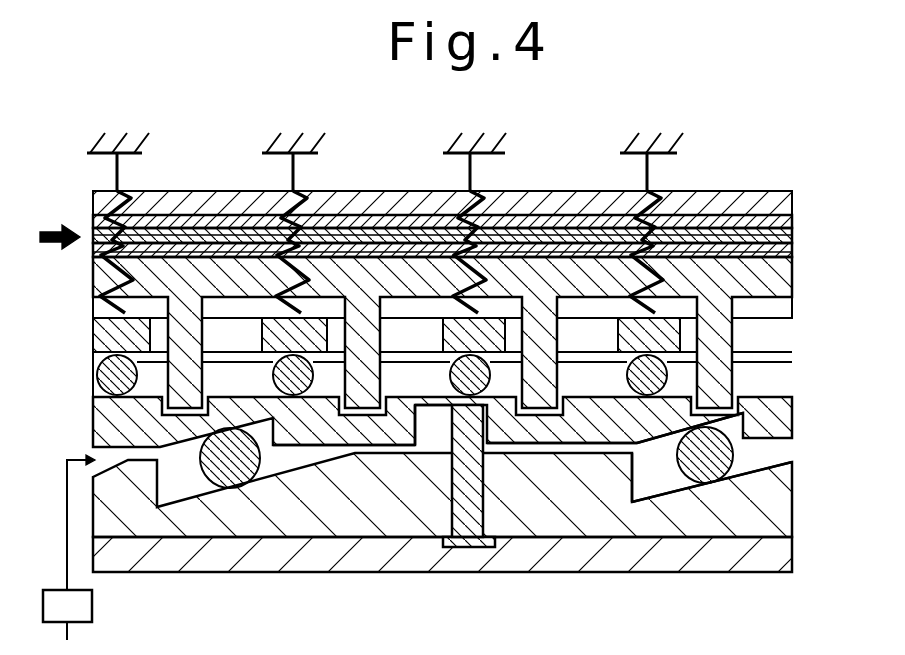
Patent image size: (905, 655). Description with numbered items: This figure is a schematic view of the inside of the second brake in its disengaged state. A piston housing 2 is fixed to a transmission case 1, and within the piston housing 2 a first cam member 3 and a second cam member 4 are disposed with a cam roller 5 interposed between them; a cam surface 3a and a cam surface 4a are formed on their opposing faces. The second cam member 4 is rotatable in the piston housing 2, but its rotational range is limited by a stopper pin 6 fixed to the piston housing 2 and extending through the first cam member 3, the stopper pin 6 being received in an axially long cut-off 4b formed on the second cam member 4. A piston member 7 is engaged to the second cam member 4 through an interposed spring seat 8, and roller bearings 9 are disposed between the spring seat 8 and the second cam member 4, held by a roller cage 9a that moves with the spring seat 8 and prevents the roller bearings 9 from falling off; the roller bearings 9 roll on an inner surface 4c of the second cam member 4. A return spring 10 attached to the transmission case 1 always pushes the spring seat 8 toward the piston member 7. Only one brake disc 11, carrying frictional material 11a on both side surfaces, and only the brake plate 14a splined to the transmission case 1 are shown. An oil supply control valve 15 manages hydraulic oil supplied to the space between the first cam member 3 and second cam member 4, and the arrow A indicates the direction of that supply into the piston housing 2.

The transmission case 1 is at (667, 142).
The return spring 10 is at (643, 170).
The brake plate 14a is at (777, 203).
The frictional material 11a is at (777, 220).
The brake disc 11 is at (777, 235).
The piston member 7 is at (777, 274).
The spring seat 8 is at (670, 335).
The roller bearing 9 is at (650, 382).
The roller cage 9a is at (616, 366).
The second cam member 4 is at (777, 418).
The cam surface 4a is at (655, 446).
The cut-off 4b is at (428, 412).
The inner surface 4c is at (580, 392).
The cam roller 5 is at (730, 453).
The first cam member 3 is at (763, 503).
The cam surface 3a is at (665, 490).
The piston housing 2 is at (770, 549).
The stopper pin 6 is at (465, 512).
The oil supply control valve 15 is at (92, 607).
The fluid flow direction A is at (60, 224).